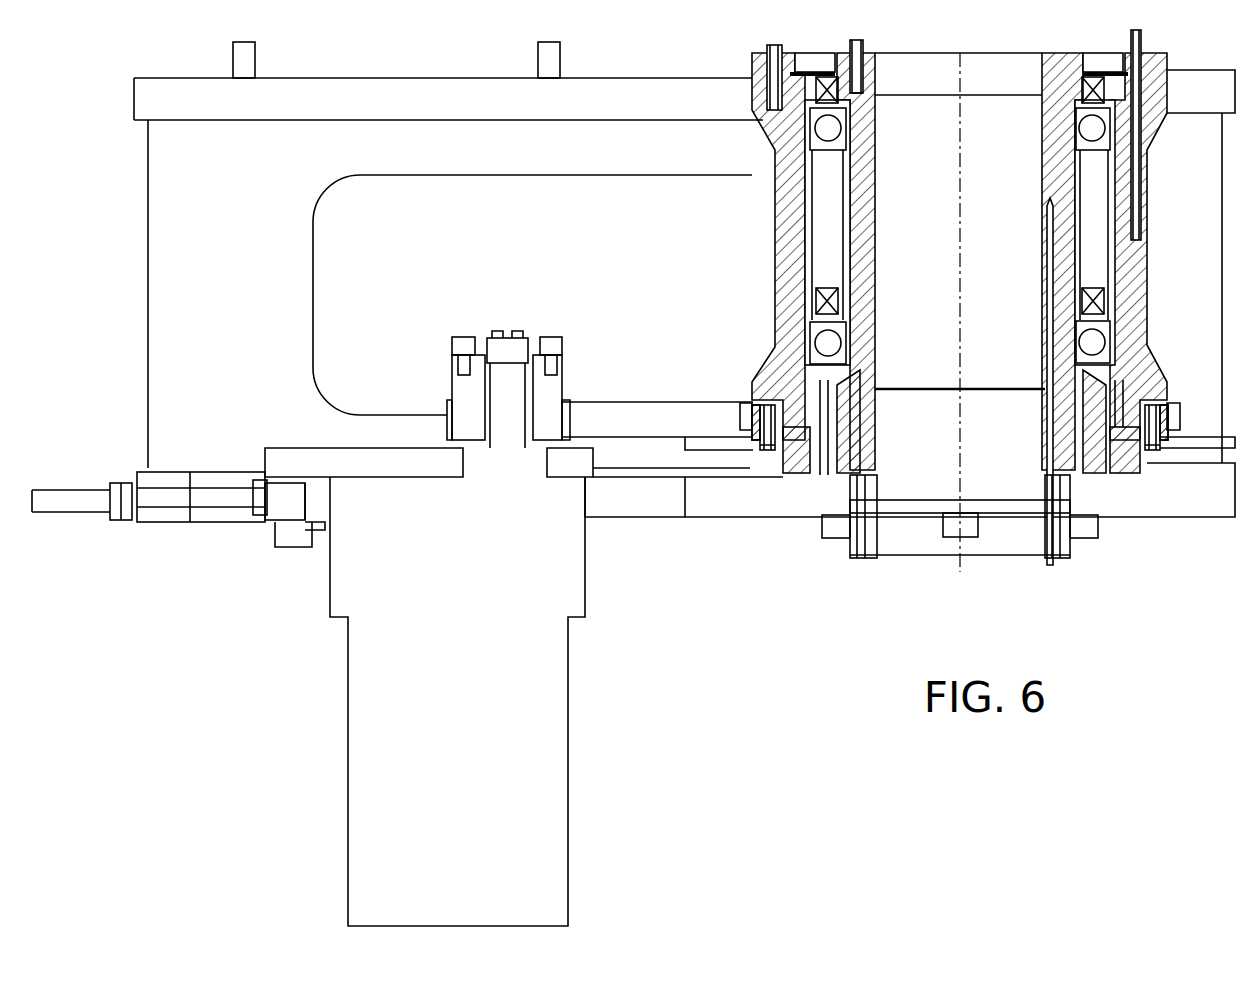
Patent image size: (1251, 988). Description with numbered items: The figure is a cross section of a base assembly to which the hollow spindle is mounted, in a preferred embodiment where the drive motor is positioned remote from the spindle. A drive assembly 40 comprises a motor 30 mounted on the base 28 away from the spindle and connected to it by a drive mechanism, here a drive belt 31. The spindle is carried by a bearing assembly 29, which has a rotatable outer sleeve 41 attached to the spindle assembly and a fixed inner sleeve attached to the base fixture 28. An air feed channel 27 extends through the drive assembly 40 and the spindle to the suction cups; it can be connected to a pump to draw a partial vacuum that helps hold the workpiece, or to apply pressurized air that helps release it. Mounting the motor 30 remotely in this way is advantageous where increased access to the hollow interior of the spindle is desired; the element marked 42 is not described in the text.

The air feed channel 27 is at (1050, 485).
The base 28 is at (320, 90).
The bearing assembly 29 is at (845, 128).
The motor 30 is at (537, 857).
The drive belt 31 is at (755, 420).
The drive assembly 40 is at (866, 725).
The rotatable outer sleeve 41 is at (785, 52).
The sleeve 42 is at (866, 54).